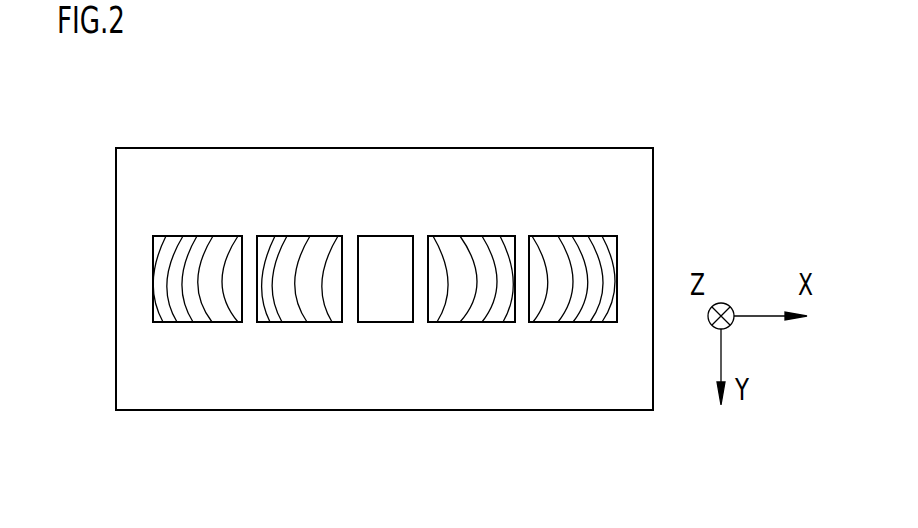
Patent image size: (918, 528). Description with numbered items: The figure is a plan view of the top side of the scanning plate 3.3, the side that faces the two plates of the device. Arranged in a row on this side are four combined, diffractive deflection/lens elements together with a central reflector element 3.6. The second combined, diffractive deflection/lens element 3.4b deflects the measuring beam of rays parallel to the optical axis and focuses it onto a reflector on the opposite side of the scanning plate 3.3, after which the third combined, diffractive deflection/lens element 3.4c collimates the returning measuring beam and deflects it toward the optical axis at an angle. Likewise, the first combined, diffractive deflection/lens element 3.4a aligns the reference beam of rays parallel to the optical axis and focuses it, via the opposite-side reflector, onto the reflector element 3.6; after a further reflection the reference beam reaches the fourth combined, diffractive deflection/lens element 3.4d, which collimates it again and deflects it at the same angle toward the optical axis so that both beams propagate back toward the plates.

The scanning plate 3.3 is at (630, 397).
The first combined diffractive deflection/lens element 3.4a is at (205, 307).
The second combined diffractive deflection/lens element 3.4b is at (305, 307).
The third combined diffractive deflection/lens element 3.4c is at (499, 307).
The fourth combined diffractive deflection/lens element 3.4d is at (601, 307).
The reflector element 3.6 is at (397, 307).